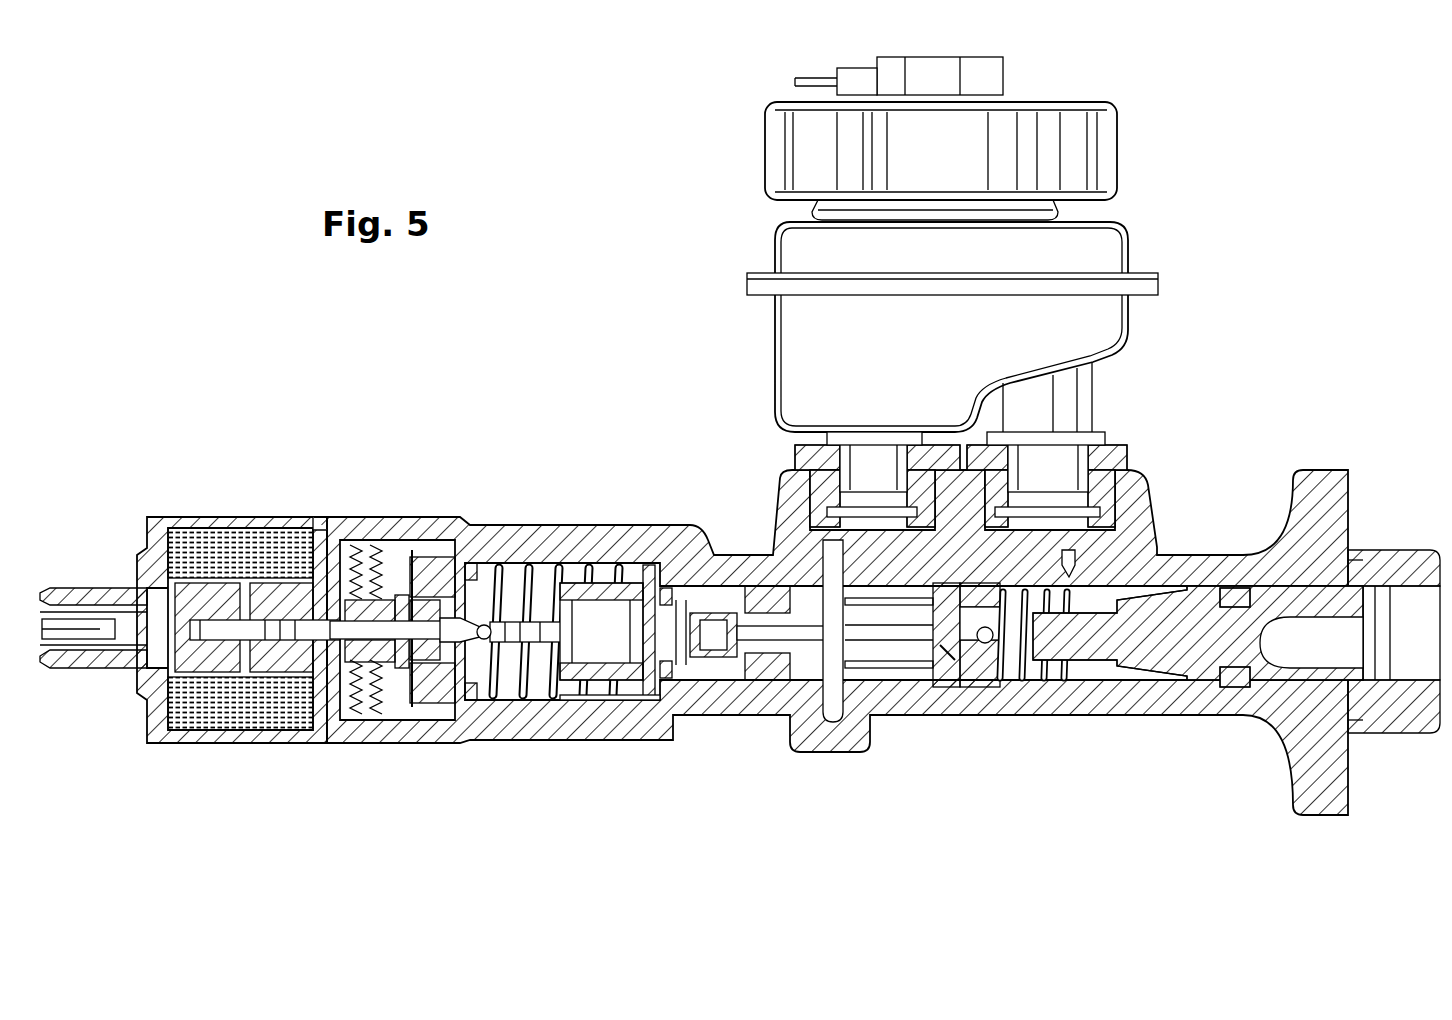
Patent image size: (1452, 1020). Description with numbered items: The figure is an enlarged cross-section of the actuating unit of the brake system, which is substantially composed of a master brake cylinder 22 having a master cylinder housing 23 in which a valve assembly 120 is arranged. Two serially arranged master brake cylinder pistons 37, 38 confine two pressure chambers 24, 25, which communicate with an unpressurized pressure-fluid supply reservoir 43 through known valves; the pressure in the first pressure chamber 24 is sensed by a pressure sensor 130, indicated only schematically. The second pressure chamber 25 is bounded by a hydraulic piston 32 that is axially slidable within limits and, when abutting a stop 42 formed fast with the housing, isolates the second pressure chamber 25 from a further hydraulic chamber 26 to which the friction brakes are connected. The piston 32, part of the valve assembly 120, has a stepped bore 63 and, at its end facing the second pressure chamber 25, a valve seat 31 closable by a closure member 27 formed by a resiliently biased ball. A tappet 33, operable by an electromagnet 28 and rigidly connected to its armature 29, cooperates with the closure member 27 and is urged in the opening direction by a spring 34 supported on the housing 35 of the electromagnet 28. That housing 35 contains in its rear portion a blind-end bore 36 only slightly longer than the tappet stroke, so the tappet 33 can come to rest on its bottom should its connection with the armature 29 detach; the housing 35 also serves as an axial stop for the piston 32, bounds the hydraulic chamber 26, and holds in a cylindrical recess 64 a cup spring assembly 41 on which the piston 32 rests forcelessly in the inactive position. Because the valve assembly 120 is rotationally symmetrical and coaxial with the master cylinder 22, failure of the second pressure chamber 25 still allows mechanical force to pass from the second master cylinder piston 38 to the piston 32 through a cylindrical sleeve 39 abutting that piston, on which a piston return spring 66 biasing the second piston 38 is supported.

The master brake cylinder 22 is at (538, 523).
The master cylinder housing 23 is at (998, 690).
The first pressure chamber 24 is at (1030, 672).
The second pressure chamber 25 is at (545, 572).
The hydraulic chamber 26 is at (398, 690).
The closure member 27 is at (488, 655).
The electromagnet 28 is at (150, 710).
The armature 29 is at (265, 740).
The valve seat 31 is at (470, 695).
The hydraulic piston 32 is at (452, 575).
The tappet 33 is at (346, 588).
The spring 34 is at (416, 690).
The housing of the electromagnet 35 is at (202, 733).
The blind-end bore 36 is at (194, 625).
The first master brake cylinder piston 37 is at (1163, 658).
The second master brake cylinder piston 38 is at (750, 672).
The cylindrical sleeve 39 is at (620, 575).
The cup spring assembly 41 is at (374, 585).
The stop 42 is at (470, 575).
The pressure-fluid supply reservoir 43 is at (1108, 328).
The stepped bore 63 is at (431, 690).
The cylindrical recess 64 is at (355, 690).
The piston return spring 66 is at (585, 700).
The valve assembly 120 is at (314, 512).
The pressure sensor 130 is at (945, 655).